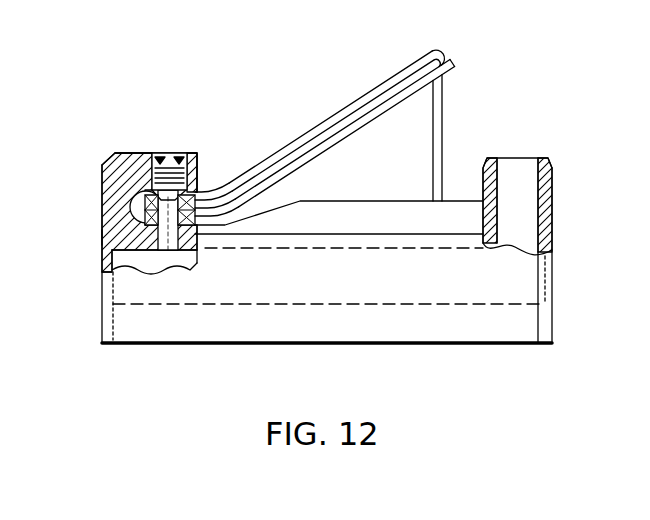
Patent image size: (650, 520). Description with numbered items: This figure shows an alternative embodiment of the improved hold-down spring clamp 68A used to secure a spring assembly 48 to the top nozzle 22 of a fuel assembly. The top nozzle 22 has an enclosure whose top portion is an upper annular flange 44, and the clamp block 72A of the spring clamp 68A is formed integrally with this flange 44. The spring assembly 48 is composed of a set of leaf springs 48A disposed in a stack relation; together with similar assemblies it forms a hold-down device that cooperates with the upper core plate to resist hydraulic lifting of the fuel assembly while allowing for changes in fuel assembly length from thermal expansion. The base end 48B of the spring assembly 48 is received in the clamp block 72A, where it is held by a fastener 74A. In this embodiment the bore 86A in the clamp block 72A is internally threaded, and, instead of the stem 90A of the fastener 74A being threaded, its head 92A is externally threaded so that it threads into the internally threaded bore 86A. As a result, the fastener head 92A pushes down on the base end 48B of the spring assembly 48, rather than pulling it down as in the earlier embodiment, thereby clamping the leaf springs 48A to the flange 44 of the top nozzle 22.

The top nozzle 22 is at (100, 322).
The upper annular flange 44 is at (382, 227).
The spring assembly 48 is at (456, 41).
The leaf springs 48A is at (345, 136).
The base end 48B is at (205, 208).
The spring clamp 68A is at (92, 148).
The clamp block 72A is at (128, 153).
The fastener 74A is at (146, 178).
The bore 86A is at (200, 157).
The stem 90A is at (103, 236).
The head 92A is at (158, 155).